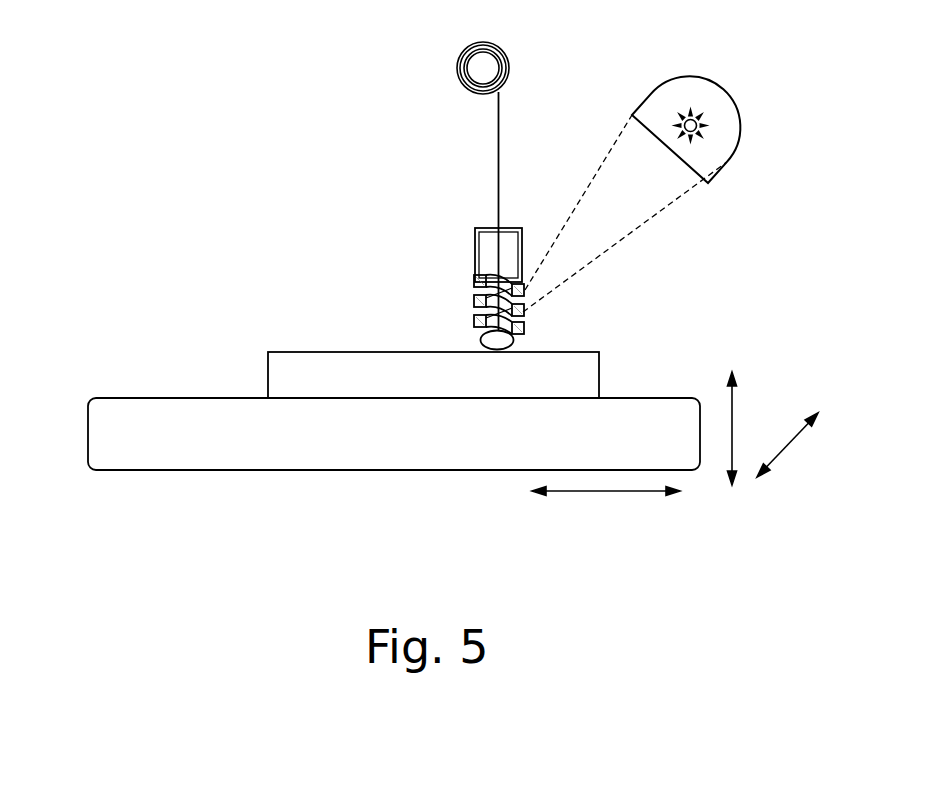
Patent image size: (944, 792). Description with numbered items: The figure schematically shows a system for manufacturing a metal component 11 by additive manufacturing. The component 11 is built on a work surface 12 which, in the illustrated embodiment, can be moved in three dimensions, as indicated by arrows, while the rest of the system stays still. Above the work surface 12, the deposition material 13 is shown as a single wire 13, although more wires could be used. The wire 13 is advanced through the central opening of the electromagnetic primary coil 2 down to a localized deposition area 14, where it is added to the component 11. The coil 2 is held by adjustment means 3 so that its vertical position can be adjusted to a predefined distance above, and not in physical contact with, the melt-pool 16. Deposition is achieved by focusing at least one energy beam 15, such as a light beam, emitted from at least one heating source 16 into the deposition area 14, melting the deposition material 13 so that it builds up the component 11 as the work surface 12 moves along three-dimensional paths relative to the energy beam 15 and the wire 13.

The electromagnetic primary coil 2 is at (473, 280).
The adjustment means 3 is at (521, 228).
The component 11 is at (288, 360).
The work surface 12 is at (142, 445).
The deposition material wire 13 is at (498, 192).
The localized deposition area 14 is at (452, 311).
The energy beam 15 is at (605, 222).
The heating source 16 is at (697, 127).